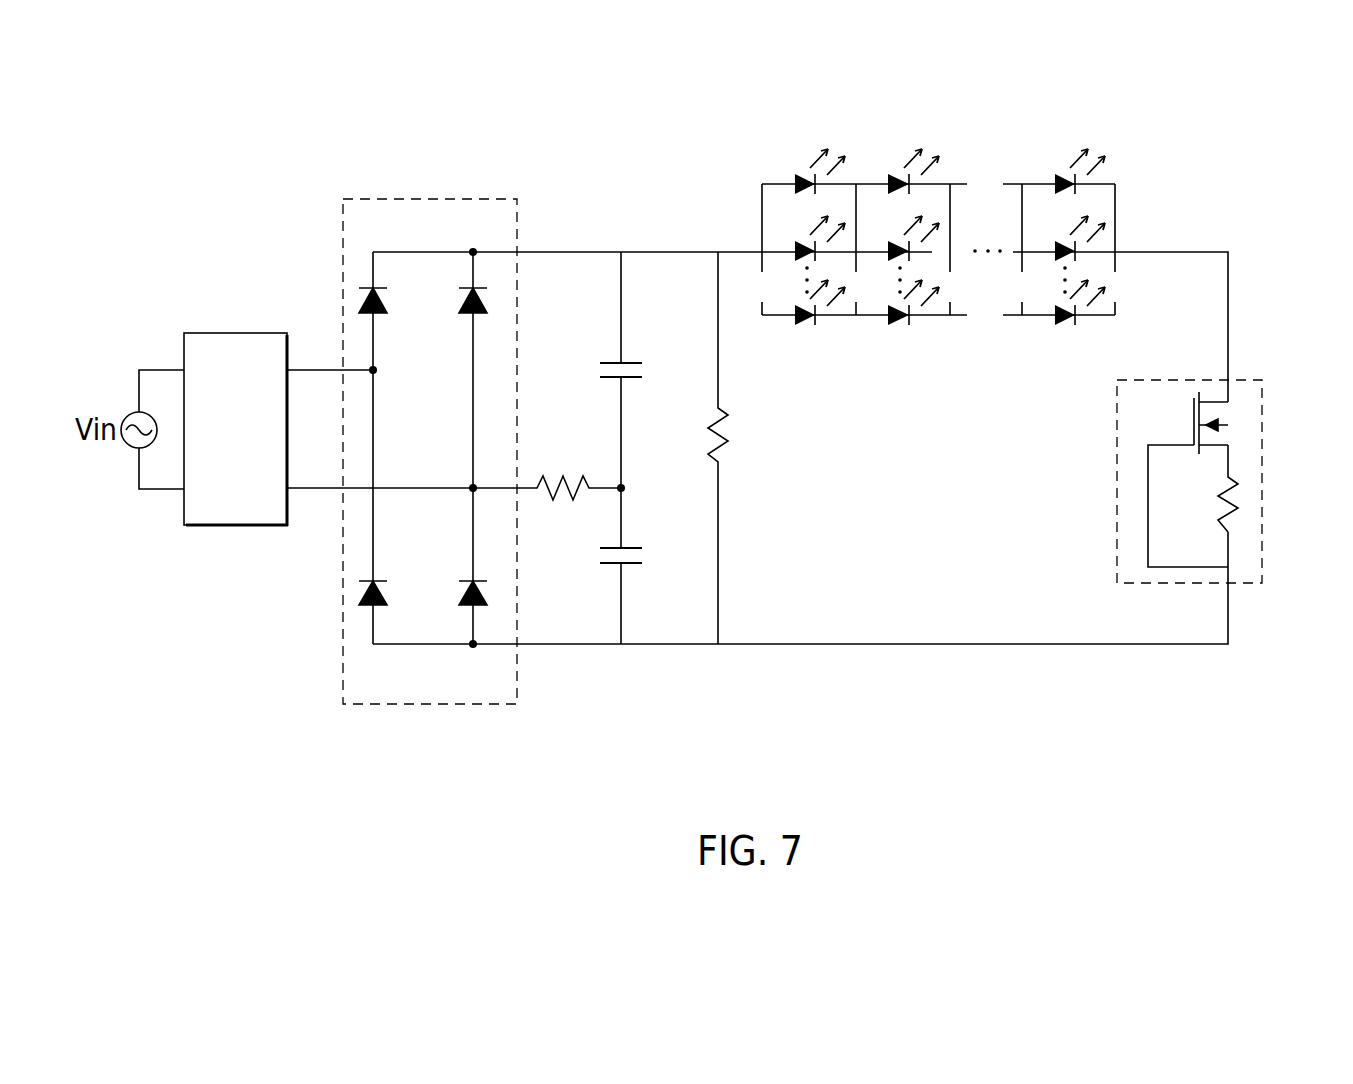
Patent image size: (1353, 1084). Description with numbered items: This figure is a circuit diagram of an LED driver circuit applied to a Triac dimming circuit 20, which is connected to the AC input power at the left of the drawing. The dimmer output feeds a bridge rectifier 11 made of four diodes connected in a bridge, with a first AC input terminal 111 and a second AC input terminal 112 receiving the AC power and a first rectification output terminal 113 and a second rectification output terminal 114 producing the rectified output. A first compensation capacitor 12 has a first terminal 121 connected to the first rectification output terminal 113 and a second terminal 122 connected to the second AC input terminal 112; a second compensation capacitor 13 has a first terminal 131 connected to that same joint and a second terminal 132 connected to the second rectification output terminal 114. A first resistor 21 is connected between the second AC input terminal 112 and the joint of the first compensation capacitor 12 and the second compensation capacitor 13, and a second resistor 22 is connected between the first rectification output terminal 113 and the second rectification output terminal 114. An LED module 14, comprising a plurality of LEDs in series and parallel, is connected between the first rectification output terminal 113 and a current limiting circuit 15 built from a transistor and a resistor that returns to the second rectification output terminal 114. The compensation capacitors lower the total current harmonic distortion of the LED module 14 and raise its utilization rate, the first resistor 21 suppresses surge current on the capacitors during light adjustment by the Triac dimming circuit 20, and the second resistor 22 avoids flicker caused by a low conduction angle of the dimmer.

The Triac dimming circuit 20 is at (228, 333).
The bridge rectifier 11 is at (437, 198).
The first AC input terminal 111 is at (373, 370).
The second AC input terminal 112 is at (473, 488).
The first rectification output terminal 113 is at (473, 252).
The second rectification output terminal 114 is at (473, 644).
The first compensation capacitor 12 is at (650, 370).
The first terminal of the first compensation capacitor 121 is at (622, 362).
The second terminal of the first compensation capacitor 122 is at (673, 371).
The second compensation capacitor 13 is at (650, 566).
The first terminal of the second compensation capacitor 131 is at (622, 548).
The second terminal of the second compensation capacitor 132 is at (673, 557).
The first resistor 21 is at (563, 472).
The second resistor 22 is at (729, 435).
The LED module 14 is at (1108, 200).
The current limiting circuit 15 is at (1262, 483).